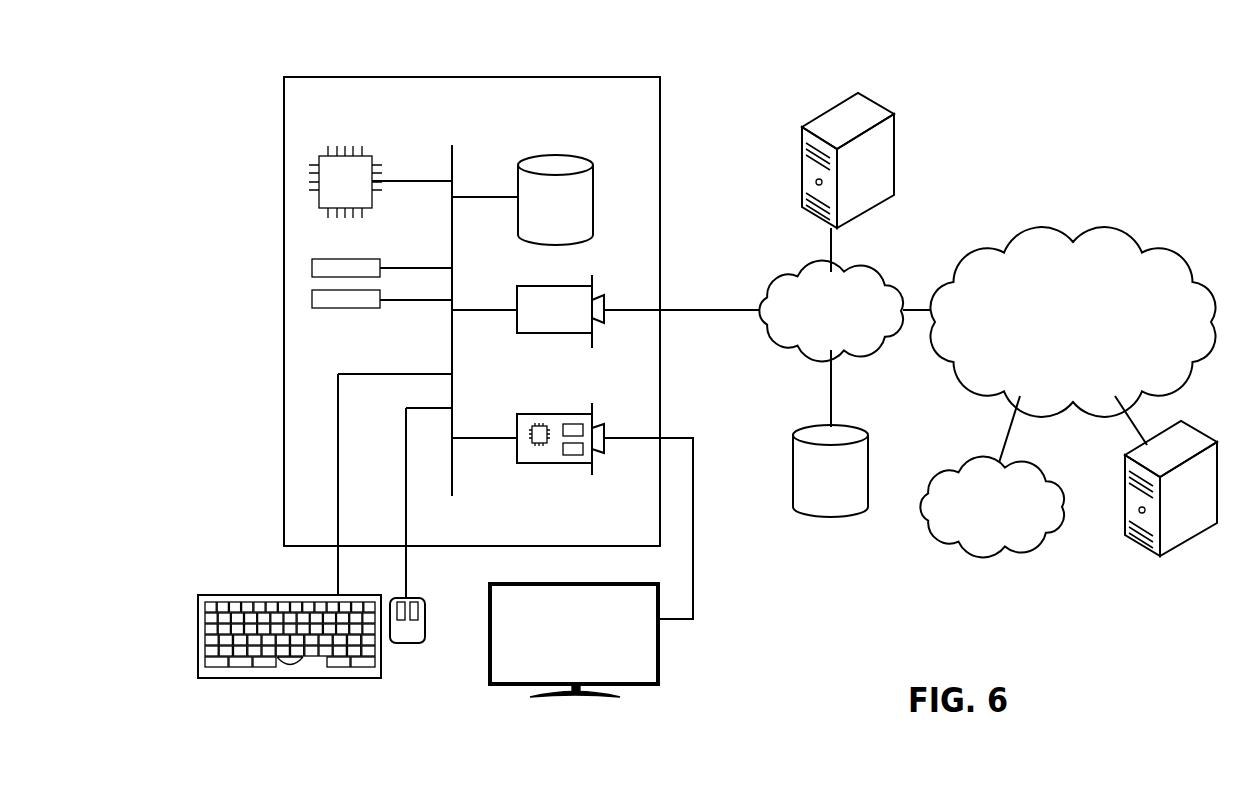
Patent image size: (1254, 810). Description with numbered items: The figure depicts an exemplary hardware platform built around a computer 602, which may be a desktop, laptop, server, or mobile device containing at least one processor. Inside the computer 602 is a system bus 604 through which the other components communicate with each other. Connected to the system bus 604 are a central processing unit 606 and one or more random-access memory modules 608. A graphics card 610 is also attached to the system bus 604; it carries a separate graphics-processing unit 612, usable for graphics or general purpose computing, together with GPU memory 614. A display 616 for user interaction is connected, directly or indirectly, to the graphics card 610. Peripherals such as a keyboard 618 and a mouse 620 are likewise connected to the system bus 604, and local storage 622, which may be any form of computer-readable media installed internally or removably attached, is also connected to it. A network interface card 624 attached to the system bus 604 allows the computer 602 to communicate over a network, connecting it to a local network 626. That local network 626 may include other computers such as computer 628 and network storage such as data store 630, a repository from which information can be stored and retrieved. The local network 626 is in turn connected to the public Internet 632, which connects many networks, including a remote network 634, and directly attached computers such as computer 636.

The computer 602 is at (618, 76).
The system bus 604 is at (454, 152).
The central processing unit 606 is at (366, 150).
The random-access memory modules 608 is at (382, 265).
The graphics card 610 is at (572, 497).
The graphics-processing unit 612 is at (540, 447).
The GPU memory 614 is at (573, 456).
The display 616 is at (660, 667).
The keyboard 618 is at (290, 678).
The mouse 620 is at (405, 643).
The local storage 622 is at (598, 180).
The network interface card 624 is at (516, 291).
The local network 626 is at (880, 272).
The computer 628 is at (878, 103).
The data store 630 is at (862, 428).
The public Internet 632 is at (1112, 240).
The remote network 634 is at (1042, 466).
The computer 636 is at (1195, 430).